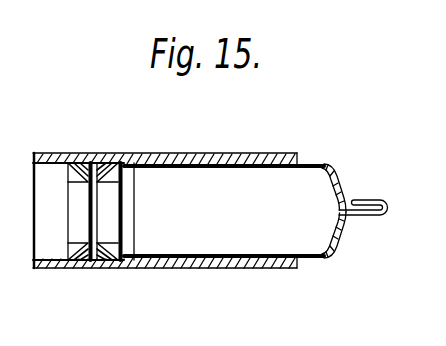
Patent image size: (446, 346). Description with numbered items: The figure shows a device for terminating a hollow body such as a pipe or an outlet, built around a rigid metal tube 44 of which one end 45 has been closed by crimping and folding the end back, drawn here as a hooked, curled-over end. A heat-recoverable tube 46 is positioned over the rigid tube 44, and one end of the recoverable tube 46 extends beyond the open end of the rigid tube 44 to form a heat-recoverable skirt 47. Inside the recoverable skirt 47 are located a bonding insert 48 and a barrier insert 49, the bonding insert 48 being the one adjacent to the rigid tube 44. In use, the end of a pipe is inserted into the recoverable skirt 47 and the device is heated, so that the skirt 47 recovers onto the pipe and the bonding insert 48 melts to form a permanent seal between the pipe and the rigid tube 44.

The rigid metal tube 44 is at (217, 259).
The closed end 45 is at (377, 216).
The heat-recoverable tube 46 is at (222, 133).
The heat-recoverable skirt 47 is at (53, 267).
The bonding insert 48 is at (116, 258).
The barrier insert 49 is at (78, 164).